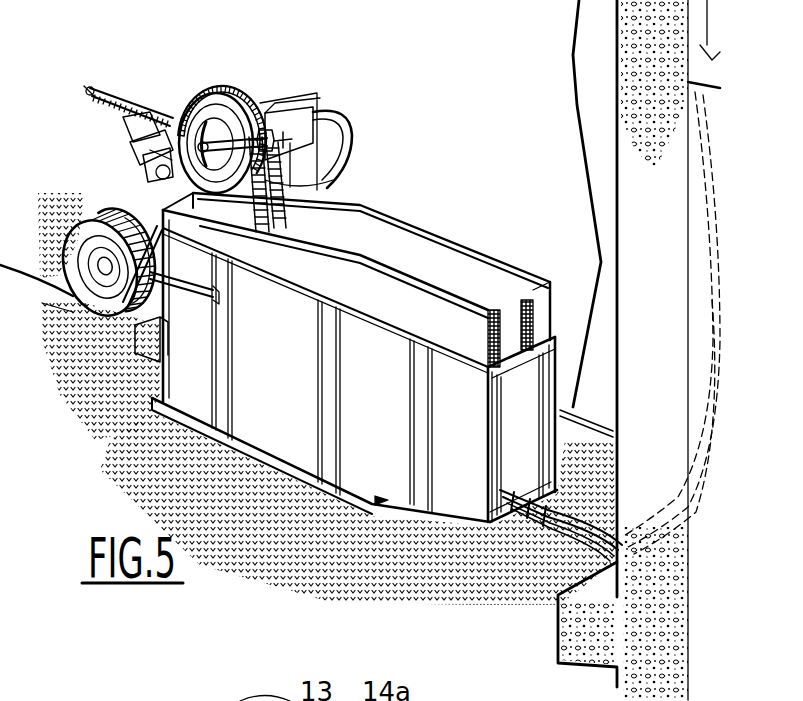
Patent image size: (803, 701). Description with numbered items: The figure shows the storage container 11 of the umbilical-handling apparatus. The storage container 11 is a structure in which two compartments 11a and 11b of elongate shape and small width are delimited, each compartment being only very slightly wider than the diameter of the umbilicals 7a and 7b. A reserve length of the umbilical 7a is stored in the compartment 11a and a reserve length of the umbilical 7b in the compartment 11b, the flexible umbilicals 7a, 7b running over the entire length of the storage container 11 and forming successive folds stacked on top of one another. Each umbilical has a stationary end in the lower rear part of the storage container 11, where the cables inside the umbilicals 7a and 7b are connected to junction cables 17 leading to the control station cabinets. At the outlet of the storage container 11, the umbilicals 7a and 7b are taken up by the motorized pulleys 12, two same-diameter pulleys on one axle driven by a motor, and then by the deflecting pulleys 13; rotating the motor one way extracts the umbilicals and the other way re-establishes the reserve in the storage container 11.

The storage container 11 is at (378, 482).
The compartment 11a is at (450, 273).
The compartment 11b is at (527, 280).
The motorized pulleys 12 is at (223, 88).
The deflecting pulleys 13 is at (100, 283).
The junction cables 17 is at (585, 522).
The umbilical 7a is at (250, 214).
The umbilical 7b is at (335, 178).